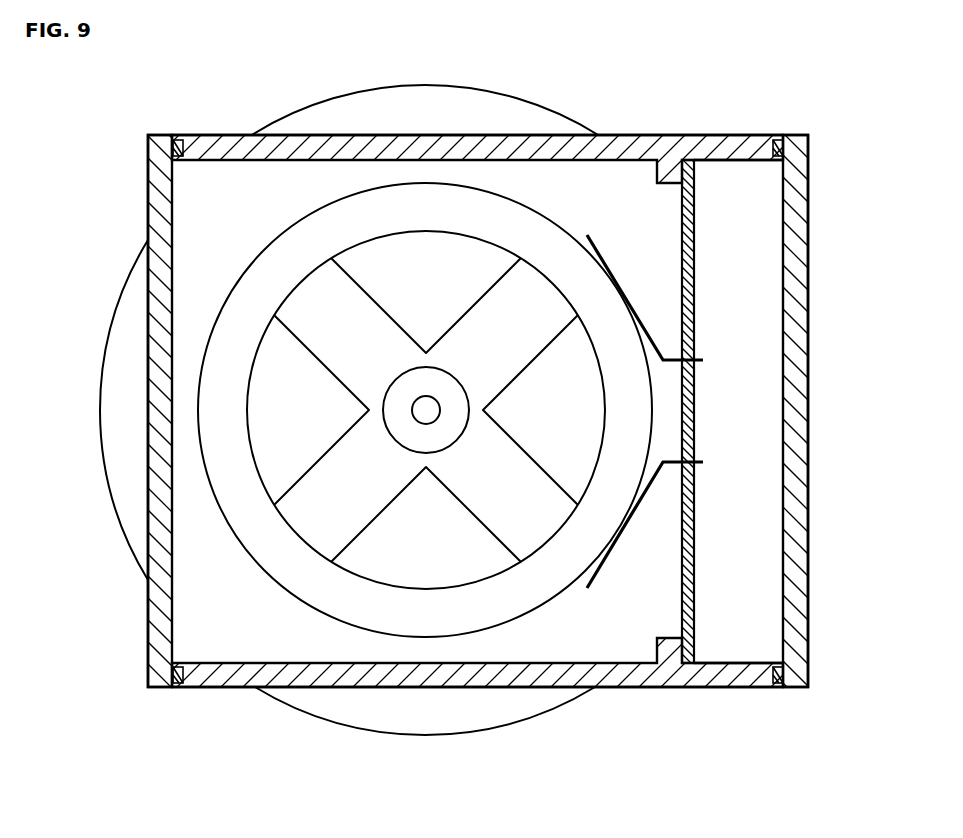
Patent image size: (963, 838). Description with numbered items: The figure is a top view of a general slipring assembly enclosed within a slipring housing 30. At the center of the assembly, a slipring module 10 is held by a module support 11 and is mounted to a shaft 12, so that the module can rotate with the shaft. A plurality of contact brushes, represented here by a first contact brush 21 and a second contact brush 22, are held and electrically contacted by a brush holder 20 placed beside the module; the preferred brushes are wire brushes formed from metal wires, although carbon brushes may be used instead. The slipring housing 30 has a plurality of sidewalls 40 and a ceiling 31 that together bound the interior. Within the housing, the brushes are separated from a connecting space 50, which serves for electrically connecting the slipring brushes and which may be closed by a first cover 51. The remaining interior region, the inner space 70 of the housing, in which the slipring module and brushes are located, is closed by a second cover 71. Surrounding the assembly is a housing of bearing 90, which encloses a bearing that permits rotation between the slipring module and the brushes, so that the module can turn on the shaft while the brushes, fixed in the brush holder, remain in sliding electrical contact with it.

The slipring module 10 is at (413, 391).
The module support 11 is at (337, 303).
The shaft 12 is at (426, 387).
The brush holder 20 is at (688, 290).
The first contact brush 21 is at (648, 490).
The second contact brush 22 is at (648, 332).
The slipring housing 30 is at (676, 710).
The ceiling 31 is at (776, 685).
The sidewall 40 is at (645, 678).
The connecting space 50 is at (760, 406).
The first cover 51 is at (795, 583).
The inner space of housing 70 is at (190, 570).
The second cover 71 is at (160, 228).
The housing of bearing 90 is at (127, 405).